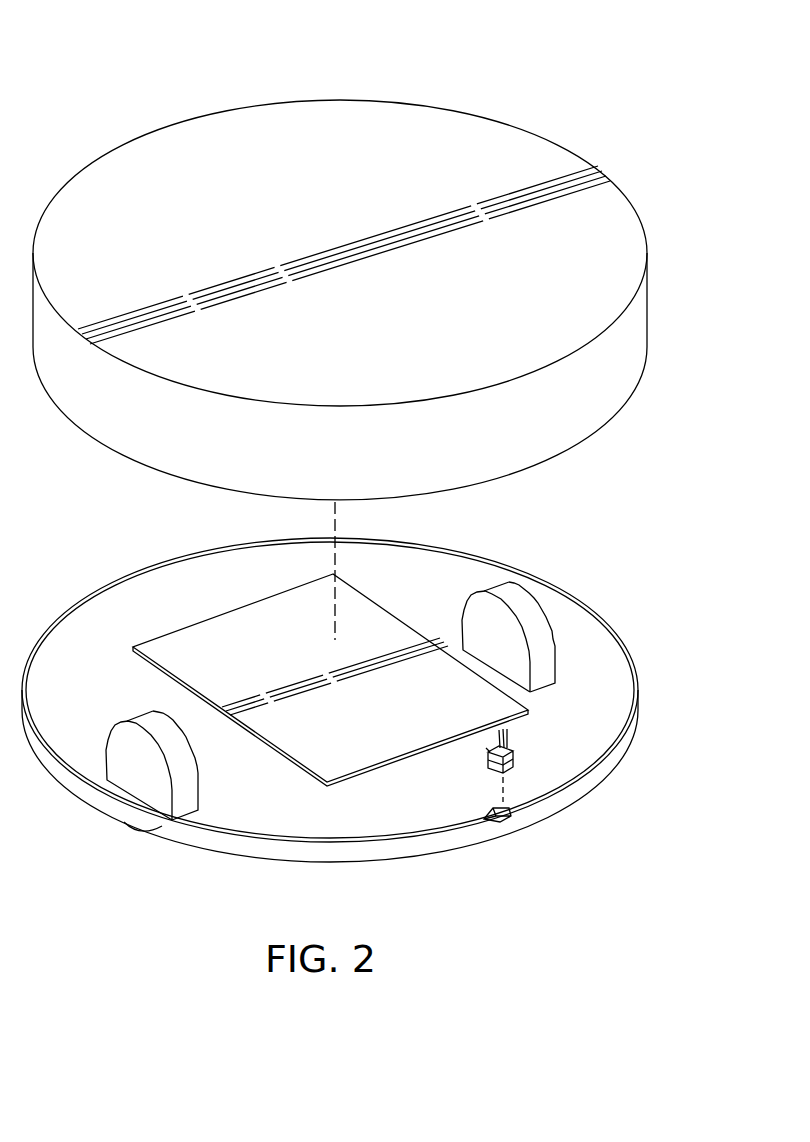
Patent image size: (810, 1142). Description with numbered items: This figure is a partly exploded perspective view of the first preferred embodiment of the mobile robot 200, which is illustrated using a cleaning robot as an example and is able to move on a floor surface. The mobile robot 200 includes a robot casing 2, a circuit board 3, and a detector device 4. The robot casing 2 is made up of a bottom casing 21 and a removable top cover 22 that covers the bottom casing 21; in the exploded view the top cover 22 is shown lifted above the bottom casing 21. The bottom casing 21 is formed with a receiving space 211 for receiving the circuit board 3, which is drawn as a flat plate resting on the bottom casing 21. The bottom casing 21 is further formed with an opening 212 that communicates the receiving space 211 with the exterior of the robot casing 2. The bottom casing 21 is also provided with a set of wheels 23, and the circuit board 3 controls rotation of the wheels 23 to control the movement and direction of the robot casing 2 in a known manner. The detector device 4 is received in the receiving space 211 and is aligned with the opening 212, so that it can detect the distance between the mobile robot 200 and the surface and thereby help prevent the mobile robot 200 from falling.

The mobile robot 200 is at (104, 103).
The robot casing 2 is at (72, 176).
The removable top cover 22 is at (115, 405).
The circuit board 3 is at (377, 637).
The detector device 4 is at (522, 740).
The bottom casing 21 is at (402, 848).
The receiving space 211 is at (262, 803).
The opening 212 is at (508, 822).
The wheels 23 is at (137, 833).